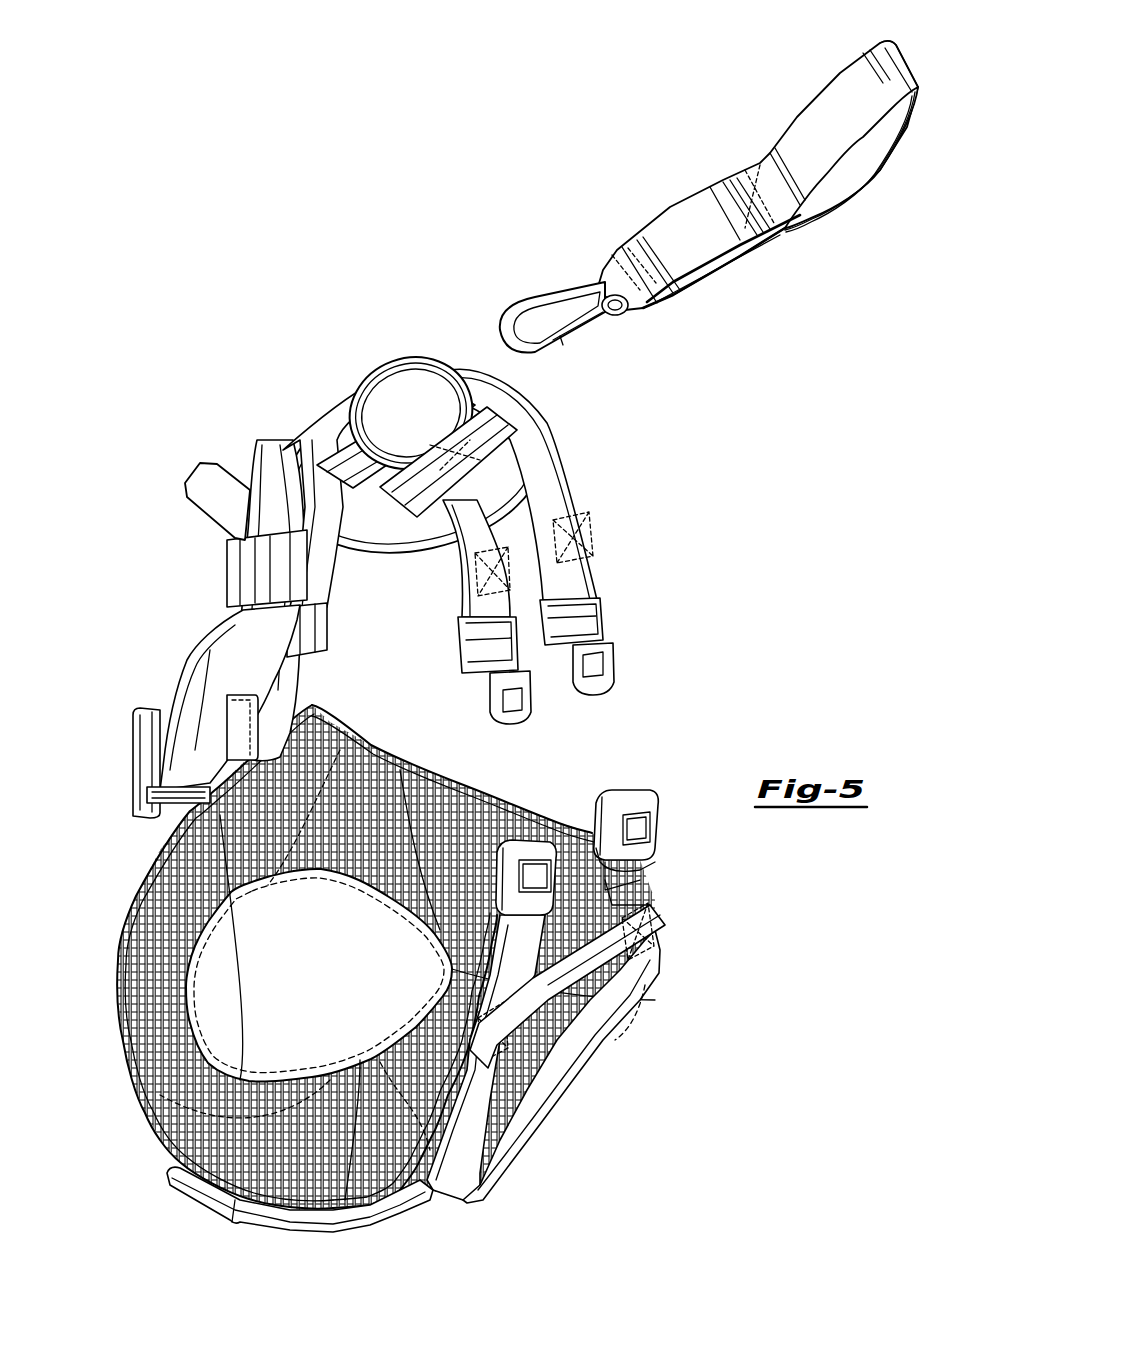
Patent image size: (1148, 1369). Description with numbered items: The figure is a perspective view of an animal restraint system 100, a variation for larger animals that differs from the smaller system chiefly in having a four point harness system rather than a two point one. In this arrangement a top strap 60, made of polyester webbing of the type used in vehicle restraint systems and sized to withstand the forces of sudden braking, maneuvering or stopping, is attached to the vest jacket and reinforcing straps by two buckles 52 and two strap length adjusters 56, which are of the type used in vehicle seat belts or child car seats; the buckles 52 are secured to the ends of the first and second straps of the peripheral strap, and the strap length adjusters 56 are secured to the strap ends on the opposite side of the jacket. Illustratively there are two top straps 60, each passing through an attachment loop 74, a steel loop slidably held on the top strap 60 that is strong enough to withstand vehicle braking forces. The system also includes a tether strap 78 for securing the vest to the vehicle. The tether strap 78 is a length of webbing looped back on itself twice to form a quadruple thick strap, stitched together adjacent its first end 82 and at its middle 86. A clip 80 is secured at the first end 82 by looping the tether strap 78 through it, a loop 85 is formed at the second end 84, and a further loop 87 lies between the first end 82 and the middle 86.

The animal restraint system 100 is at (693, 480).
The buckle 52 is at (533, 838).
The strap length adjuster 56 is at (237, 707).
The top strap 60 is at (510, 598).
The attachment loop 74 is at (362, 388).
The tether strap 78 is at (667, 207).
The clip 80 is at (533, 293).
The first end 82 is at (637, 320).
The second end 84 is at (912, 72).
The loop 85 is at (857, 167).
The middle 86 is at (790, 233).
The loop 87 is at (720, 270).